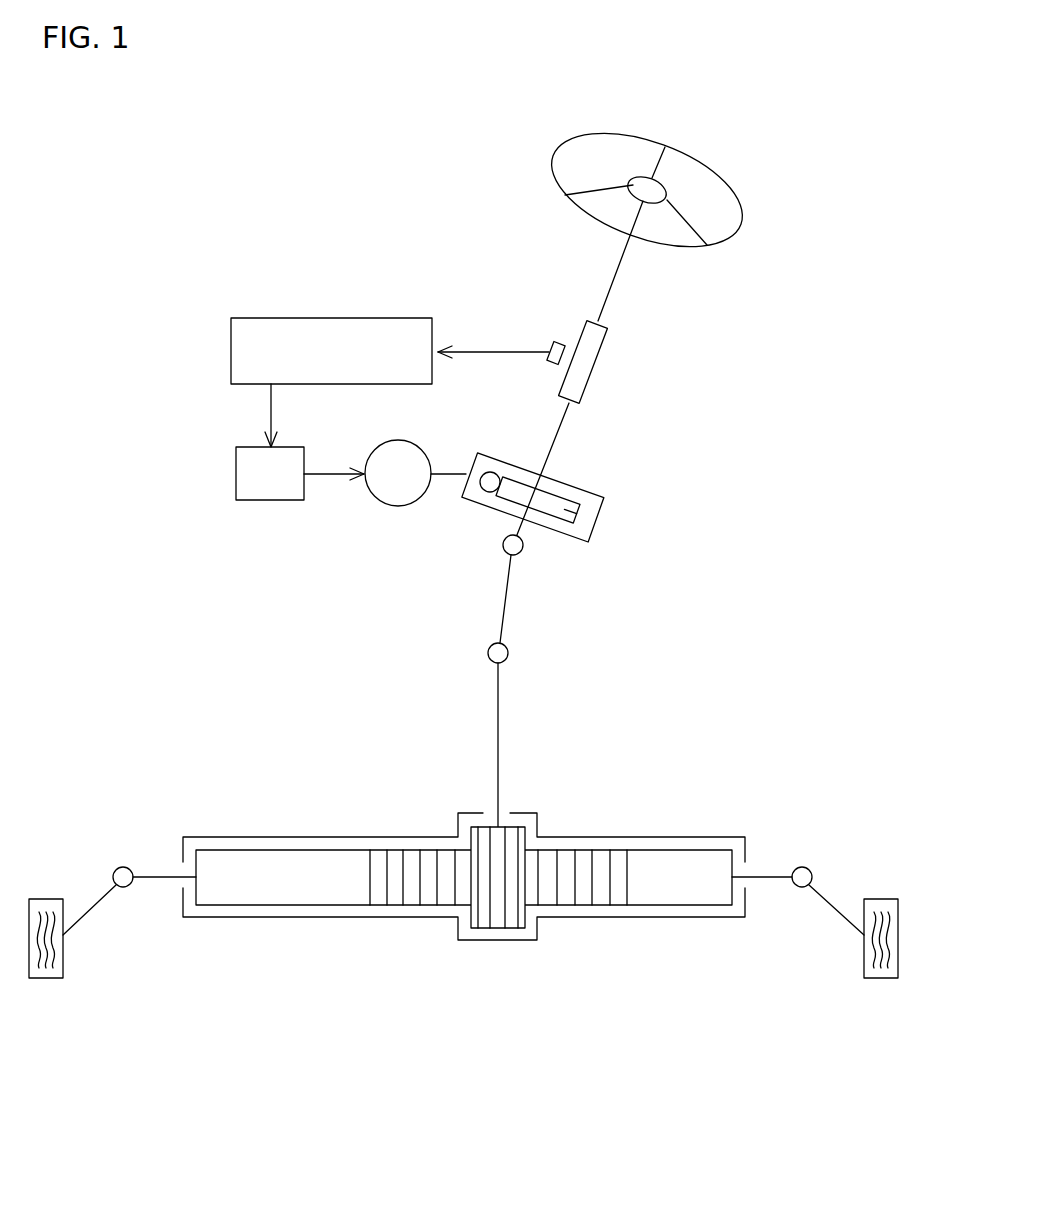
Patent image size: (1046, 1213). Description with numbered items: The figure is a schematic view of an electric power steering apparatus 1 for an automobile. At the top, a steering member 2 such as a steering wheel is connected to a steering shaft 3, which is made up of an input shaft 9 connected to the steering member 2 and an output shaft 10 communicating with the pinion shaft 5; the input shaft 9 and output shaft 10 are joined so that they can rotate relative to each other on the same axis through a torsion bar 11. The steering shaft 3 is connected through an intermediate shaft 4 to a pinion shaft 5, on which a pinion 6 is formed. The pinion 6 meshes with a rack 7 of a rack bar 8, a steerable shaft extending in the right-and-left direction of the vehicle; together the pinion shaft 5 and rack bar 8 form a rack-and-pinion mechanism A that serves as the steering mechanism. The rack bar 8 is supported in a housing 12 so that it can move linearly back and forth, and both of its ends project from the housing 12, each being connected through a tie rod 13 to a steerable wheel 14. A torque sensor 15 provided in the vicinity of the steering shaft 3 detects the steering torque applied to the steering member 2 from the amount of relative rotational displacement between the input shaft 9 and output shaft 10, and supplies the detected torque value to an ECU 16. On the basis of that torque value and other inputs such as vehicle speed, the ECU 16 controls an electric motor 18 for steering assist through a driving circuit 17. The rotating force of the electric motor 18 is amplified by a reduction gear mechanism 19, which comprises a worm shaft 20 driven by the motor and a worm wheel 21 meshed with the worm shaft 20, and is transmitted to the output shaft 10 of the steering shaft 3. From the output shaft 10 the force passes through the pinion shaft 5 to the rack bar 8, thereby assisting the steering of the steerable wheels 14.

The electric power steering apparatus 1 is at (770, 130).
The steering member 2 is at (638, 137).
The steering shaft 3 is at (623, 262).
The intermediate shaft 4 is at (508, 600).
The pinion shaft 5 is at (500, 770).
The pinion 6 is at (508, 922).
The rack 7 is at (430, 897).
The rack bar 8 is at (583, 905).
The input shaft 9 is at (610, 298).
The output shaft 10 is at (557, 437).
The torsion bar 11 is at (597, 365).
The housing 12 is at (353, 837).
The tie rod 13 is at (100, 905).
The steerable wheel 14 is at (46, 978).
The torque sensor 15 is at (557, 343).
The ECU 16 is at (265, 318).
The driving circuit 17 is at (236, 472).
The electric motor 18 is at (400, 507).
The reduction gear mechanism 19 is at (600, 505).
The worm shaft 20 is at (489, 492).
The worm wheel 21 is at (575, 515).
The rack-and-pinion mechanism A is at (545, 938).